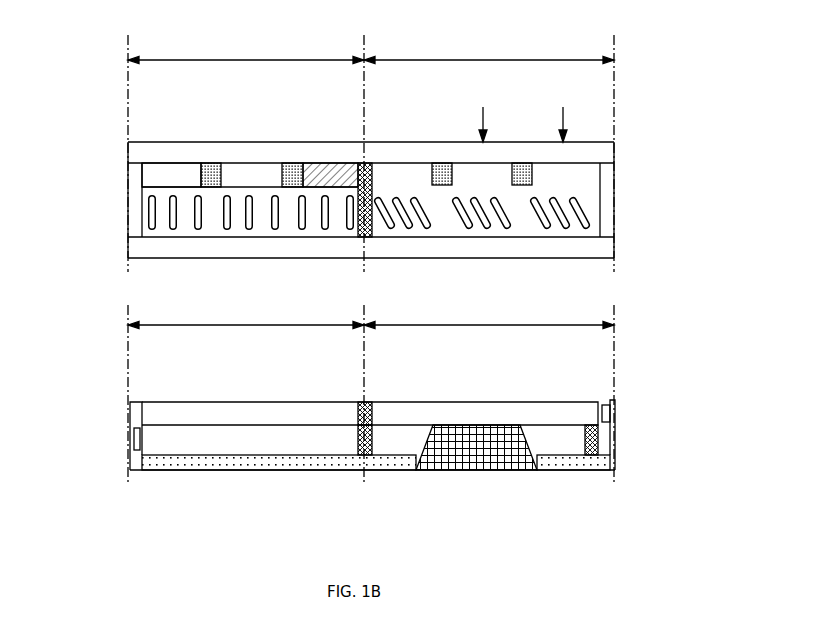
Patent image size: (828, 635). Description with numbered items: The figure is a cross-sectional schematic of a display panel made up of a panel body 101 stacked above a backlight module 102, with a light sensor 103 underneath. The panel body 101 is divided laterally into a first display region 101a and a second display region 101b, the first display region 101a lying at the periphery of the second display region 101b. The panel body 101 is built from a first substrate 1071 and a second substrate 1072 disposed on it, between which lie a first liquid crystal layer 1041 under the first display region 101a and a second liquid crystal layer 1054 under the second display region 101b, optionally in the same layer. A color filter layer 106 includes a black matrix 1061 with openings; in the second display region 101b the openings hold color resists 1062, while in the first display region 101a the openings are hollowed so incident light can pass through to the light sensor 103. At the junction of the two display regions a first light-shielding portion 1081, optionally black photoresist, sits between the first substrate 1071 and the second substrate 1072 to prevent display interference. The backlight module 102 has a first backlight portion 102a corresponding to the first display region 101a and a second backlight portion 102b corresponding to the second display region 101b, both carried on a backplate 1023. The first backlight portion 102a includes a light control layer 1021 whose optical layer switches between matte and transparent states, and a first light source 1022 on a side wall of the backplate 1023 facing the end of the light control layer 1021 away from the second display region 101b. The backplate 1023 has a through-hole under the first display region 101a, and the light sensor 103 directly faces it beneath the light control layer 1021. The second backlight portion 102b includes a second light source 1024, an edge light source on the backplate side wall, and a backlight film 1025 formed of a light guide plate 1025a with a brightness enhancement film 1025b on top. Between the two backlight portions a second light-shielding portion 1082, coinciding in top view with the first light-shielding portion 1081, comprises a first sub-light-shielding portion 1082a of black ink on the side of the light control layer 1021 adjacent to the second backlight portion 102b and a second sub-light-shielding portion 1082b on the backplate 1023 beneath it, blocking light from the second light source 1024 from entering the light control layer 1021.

The panel body 101 is at (120, 142).
The first display region 101a is at (489, 51).
The second display region 101b is at (246, 51).
The color filter layer 106 is at (155, 107).
The black matrix 1061 is at (213, 176).
The color resists 1062 is at (164, 178).
The second liquid crystal layer 1054 is at (277, 203).
The first light-shielding portion 1081 is at (367, 175).
The second substrate 1072 is at (590, 152).
The first liquid crystal layer 1041 is at (598, 229).
The first substrate 1071 is at (603, 249).
The backlight module 102 is at (120, 402).
The first backlight portion 102a is at (489, 316).
The second backlight portion 102b is at (246, 316).
The light control layer 1021 is at (493, 409).
The first light source 1022 is at (612, 412).
The backplate 1023 is at (603, 462).
The second light source 1024 is at (140, 437).
The backlight film 1025 is at (340, 378).
The light guide plate 1025a is at (250, 436).
The brightness enhancement film 1025b is at (313, 419).
The second light-shielding portion 1082 is at (455, 441).
The first sub-light-shielding portion 1082a is at (370, 406).
The second sub-light-shielding portion 1082b is at (365, 456).
The light sensor 103 is at (493, 460).